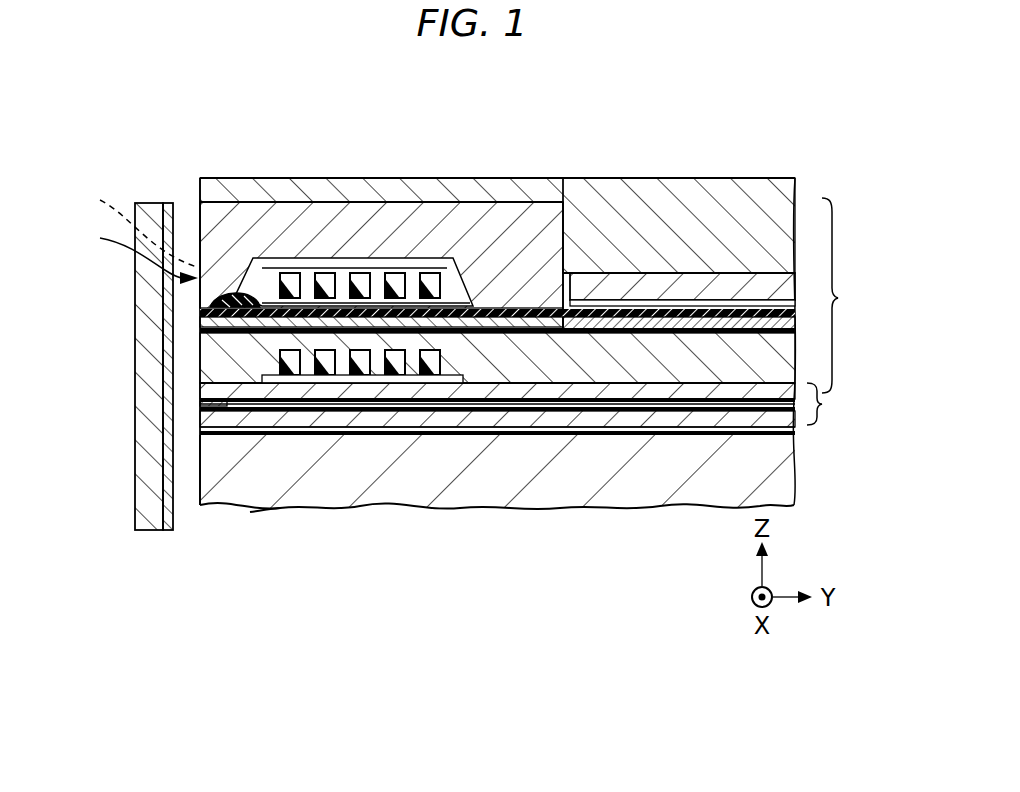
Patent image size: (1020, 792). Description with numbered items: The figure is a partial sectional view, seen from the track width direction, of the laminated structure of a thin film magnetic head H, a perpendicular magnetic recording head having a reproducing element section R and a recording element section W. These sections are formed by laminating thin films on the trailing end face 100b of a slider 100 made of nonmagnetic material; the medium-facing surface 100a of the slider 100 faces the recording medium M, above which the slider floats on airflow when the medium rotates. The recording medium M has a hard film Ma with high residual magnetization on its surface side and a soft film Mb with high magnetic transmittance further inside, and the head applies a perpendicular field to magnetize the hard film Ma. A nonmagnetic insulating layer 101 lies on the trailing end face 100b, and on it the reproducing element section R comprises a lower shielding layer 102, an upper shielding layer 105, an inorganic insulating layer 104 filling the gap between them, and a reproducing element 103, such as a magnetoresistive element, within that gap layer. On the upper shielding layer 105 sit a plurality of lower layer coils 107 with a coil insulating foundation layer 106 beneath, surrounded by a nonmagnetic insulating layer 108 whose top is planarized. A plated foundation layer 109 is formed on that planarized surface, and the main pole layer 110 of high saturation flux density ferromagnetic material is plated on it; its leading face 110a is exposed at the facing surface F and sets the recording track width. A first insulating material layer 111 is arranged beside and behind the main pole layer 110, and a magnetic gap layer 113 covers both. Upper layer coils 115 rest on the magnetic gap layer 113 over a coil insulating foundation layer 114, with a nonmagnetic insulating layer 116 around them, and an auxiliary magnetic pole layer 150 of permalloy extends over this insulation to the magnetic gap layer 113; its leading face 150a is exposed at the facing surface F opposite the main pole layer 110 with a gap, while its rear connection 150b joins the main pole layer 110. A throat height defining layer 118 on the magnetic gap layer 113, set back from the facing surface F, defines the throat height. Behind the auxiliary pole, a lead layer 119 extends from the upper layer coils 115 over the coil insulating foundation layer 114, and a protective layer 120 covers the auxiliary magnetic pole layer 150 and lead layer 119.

The thin film magnetic head H is at (95, 116).
The recording medium M is at (173, 536).
The hard film Ma is at (140, 529).
The soft film Mb is at (166, 498).
The facing surface F is at (139, 251).
The recording element section W is at (845, 295).
The reproducing element section R is at (826, 404).
The slider 100 is at (673, 483).
The medium-facing surface 100a is at (190, 480).
The trailing end face 100b is at (299, 437).
The nonmagnetic insulating layer 101 is at (200, 434).
The lower shielding layer 102 is at (200, 426).
The reproducing element 103 is at (200, 403).
The inorganic insulating layer 104 is at (533, 404).
The upper shielding layer 105 is at (200, 387).
The coil insulating foundation layer 106 is at (462, 376).
The lower layer coils 107 is at (362, 400).
The nonmagnetic insulating layer 108 is at (600, 373).
The plated foundation layer 109 is at (200, 357).
The main pole layer 110 is at (200, 330).
The leading face 110a is at (200, 319).
The first insulating material layer 111 is at (763, 300).
The magnetic gap layer 113 is at (200, 306).
The coil insulating foundation layer 114 is at (470, 298).
The upper layer coils 115 is at (357, 260).
The nonmagnetic insulating layer 116 is at (297, 268).
The throat height defining layer 118 is at (252, 292).
The lead layer 119 is at (647, 287).
The protective layer 120 is at (313, 178).
The auxiliary magnetic pole layer 150 is at (400, 220).
The leading face 150a is at (200, 234).
The connection 150b is at (517, 277).